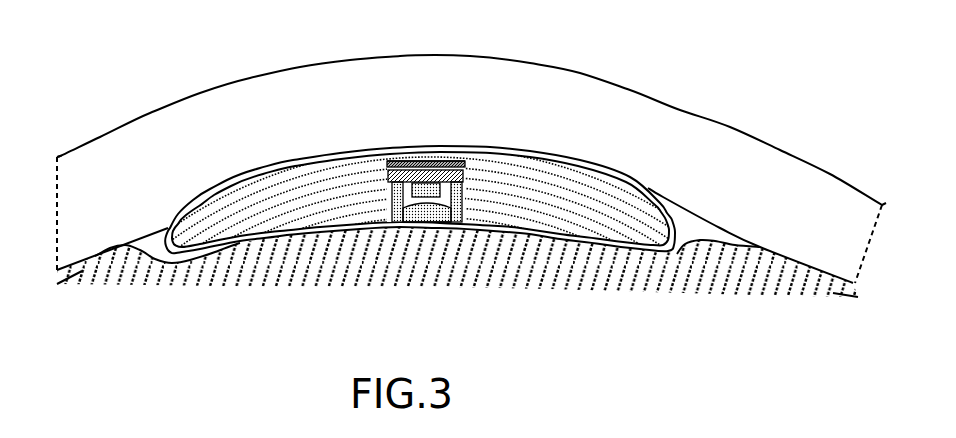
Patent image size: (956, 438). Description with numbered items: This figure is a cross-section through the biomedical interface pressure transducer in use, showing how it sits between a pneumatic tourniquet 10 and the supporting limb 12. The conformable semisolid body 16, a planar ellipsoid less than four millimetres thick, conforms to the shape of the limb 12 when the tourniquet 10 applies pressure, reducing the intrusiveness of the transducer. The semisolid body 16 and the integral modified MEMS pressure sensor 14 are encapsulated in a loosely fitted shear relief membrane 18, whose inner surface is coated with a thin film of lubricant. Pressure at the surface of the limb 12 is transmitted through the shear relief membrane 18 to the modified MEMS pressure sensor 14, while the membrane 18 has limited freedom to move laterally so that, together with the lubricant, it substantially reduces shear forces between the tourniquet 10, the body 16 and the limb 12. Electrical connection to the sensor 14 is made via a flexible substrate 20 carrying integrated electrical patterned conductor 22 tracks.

The pneumatic tourniquet 10 is at (445, 106).
The supporting limb 12 is at (687, 280).
The modified MEMS pressure sensor 14 is at (480, 172).
The conformable semisolid body 16 is at (311, 201).
The shear relief membrane 18 is at (661, 207).
The flexible substrate 20 is at (387, 167).
The electrical patterned conductor 22 is at (462, 169).